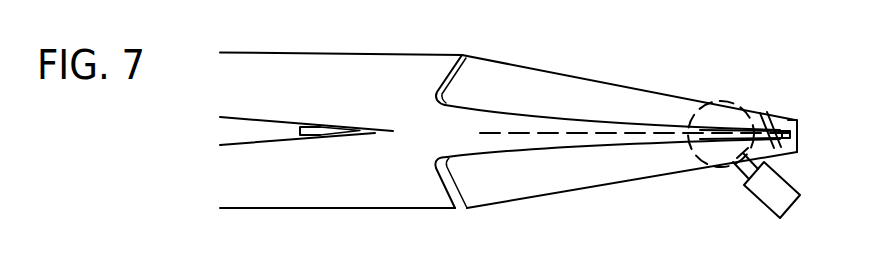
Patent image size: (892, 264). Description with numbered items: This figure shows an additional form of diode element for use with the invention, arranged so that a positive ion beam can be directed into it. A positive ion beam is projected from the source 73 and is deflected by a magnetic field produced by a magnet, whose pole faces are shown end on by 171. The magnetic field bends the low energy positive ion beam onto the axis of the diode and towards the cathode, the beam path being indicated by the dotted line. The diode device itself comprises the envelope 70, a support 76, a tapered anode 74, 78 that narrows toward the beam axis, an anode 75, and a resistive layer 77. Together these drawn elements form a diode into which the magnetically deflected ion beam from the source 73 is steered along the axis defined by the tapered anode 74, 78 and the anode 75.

The envelope 70 is at (428, 20).
The support 76 is at (462, 55).
The tapered anode 78 is at (640, 90).
The tapered anode 74 is at (593, 121).
The pole faces 171 is at (723, 103).
The resistive layer 77 is at (760, 114).
The anode 75 is at (788, 126).
The source 73 is at (757, 197).